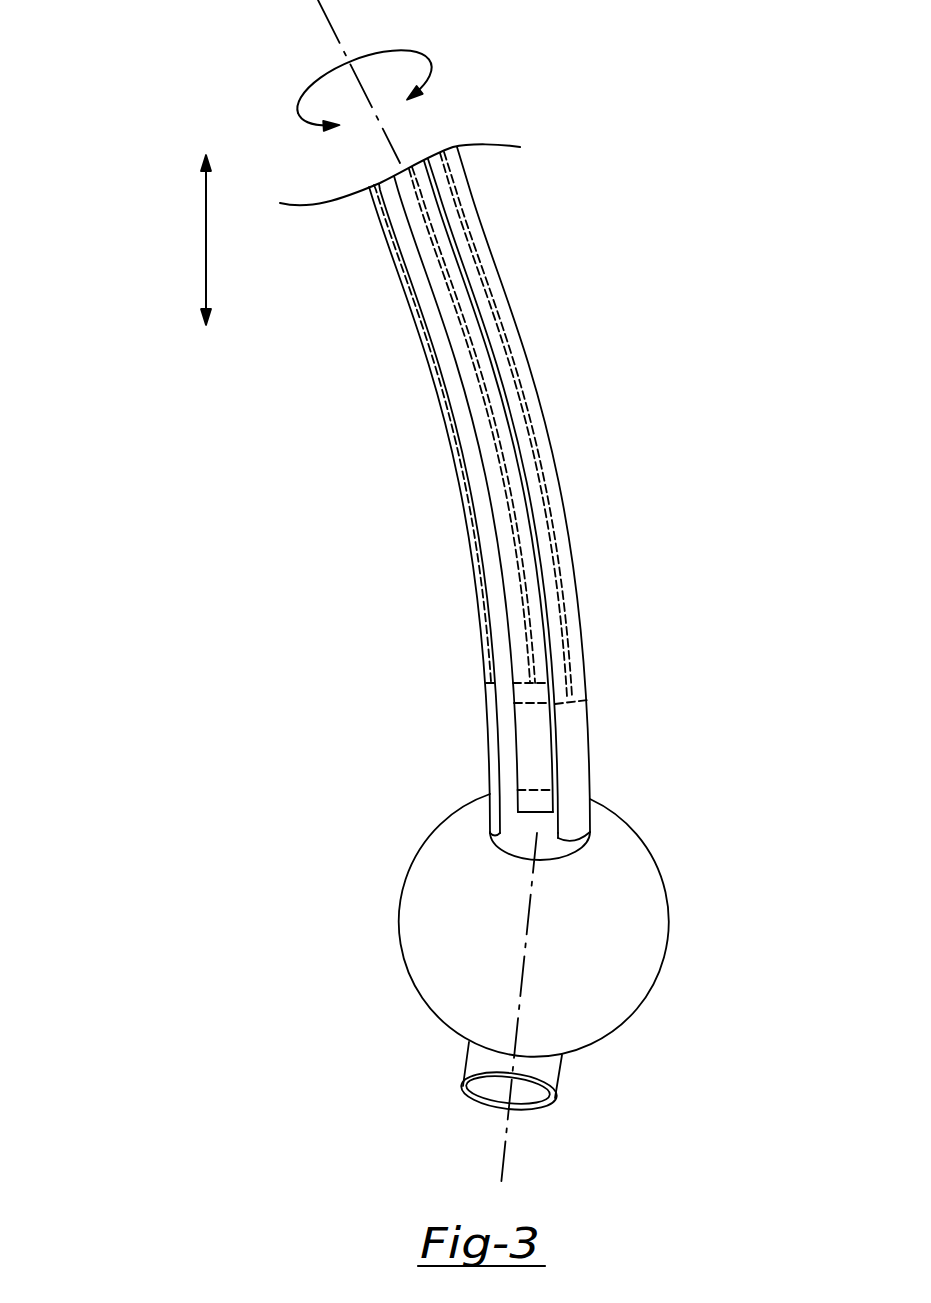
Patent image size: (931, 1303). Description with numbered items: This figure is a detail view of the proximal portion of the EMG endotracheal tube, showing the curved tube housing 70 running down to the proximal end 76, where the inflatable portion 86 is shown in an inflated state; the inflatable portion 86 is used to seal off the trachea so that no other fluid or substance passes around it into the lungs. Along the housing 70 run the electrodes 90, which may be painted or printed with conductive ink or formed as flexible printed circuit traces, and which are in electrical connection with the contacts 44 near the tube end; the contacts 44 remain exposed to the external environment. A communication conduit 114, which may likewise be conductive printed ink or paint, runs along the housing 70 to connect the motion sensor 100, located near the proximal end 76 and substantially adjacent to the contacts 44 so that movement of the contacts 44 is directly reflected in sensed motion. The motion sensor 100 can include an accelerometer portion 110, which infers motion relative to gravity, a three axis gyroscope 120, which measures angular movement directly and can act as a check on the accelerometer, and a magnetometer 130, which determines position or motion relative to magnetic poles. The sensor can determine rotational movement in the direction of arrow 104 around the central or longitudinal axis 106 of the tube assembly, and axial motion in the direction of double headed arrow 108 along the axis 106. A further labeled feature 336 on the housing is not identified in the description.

The contacts 44 is at (490, 768).
The housing 70 is at (496, 502).
The proximal end 76 is at (482, 1072).
The inflatable portion 86 is at (648, 953).
The electrodes 90 is at (418, 315).
The motion sensor 100 is at (575, 685).
The arrow 104 is at (298, 113).
The longitudinal axis 106 is at (386, 136).
The double headed arrow 108 is at (205, 228).
The accelerometer portion 110 is at (523, 688).
The communication conduit 114 is at (432, 234).
The three axis gyroscope 120 is at (522, 726).
The magnetometer 130 is at (547, 797).
The outer wall of tube 336 is at (546, 442).